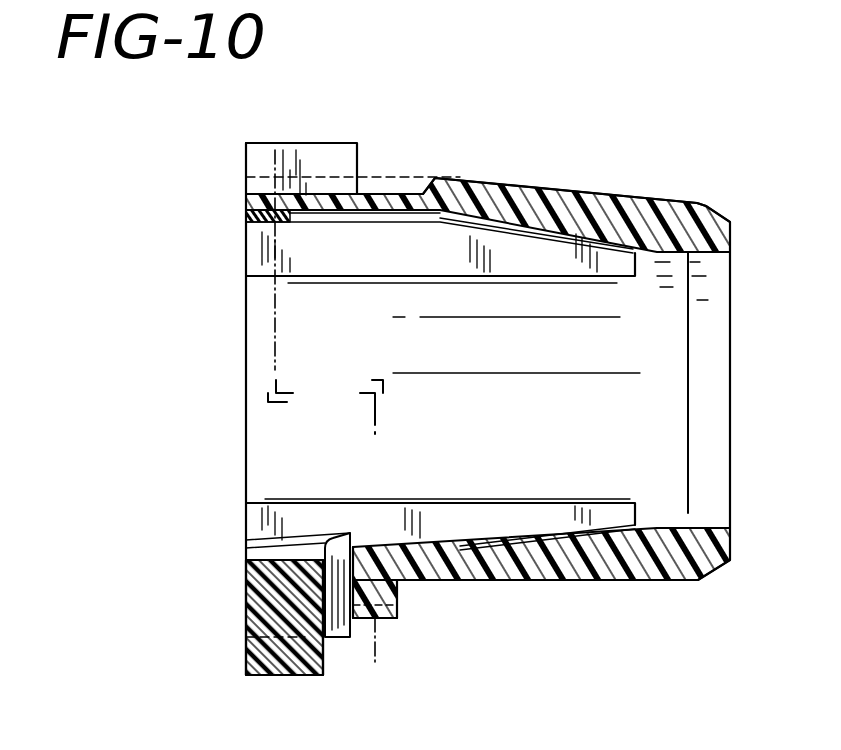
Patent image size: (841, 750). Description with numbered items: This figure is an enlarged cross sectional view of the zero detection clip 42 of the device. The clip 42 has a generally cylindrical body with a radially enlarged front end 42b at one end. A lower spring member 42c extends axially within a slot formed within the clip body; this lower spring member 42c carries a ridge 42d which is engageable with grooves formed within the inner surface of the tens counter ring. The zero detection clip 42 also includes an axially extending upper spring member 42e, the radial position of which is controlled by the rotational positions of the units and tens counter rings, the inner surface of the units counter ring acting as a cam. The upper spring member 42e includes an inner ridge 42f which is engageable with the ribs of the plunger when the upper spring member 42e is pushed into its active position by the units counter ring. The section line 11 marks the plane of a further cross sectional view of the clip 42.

The zero detection clip 42 is at (568, 150).
The radially enlarged front end 42b is at (245, 602).
The lower spring member 42c is at (517, 582).
The ridge 42d is at (390, 620).
The upper spring member 42e is at (446, 176).
The inner ridge 42f is at (265, 225).
The section line 11- 11 is at (262, 165).